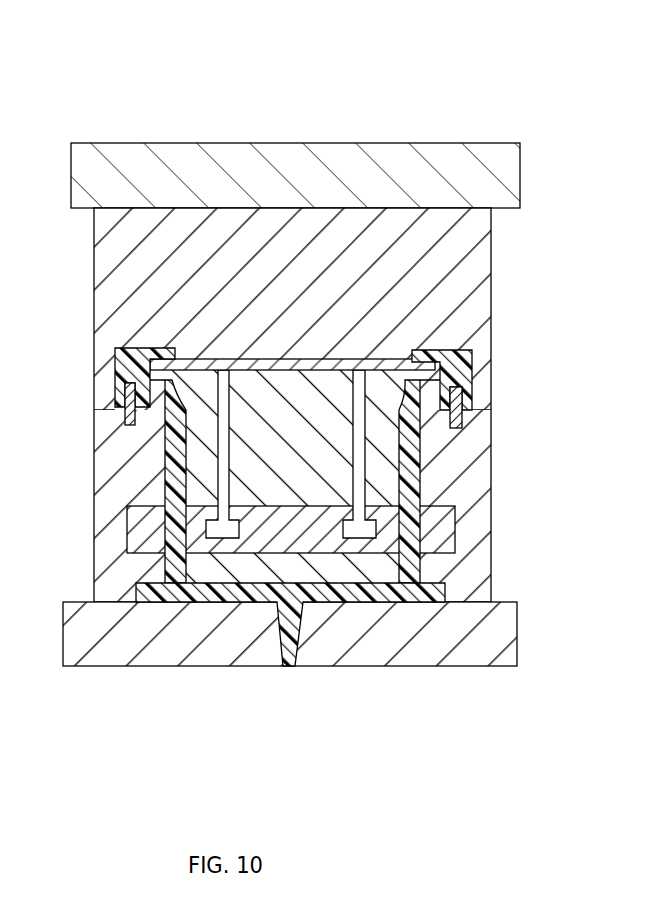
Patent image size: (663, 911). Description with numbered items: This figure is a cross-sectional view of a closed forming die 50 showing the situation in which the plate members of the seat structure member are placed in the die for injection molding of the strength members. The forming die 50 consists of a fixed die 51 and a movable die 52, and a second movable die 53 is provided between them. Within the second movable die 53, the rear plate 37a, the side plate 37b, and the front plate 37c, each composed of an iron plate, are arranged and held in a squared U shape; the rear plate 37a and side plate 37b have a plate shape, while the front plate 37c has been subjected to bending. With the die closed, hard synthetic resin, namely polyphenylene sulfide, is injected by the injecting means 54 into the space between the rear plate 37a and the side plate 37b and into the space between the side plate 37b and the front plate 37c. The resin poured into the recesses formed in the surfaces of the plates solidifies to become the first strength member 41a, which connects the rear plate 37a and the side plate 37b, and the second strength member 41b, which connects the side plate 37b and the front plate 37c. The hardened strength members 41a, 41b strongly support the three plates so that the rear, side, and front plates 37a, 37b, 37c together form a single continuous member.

The forming die 50 is at (305, 342).
The fixed die 51 is at (500, 633).
The movable die 52 is at (483, 262).
The second movable die 53 is at (482, 487).
The means for injecting hard synthetic resin 54 is at (424, 531).
The first strength member 41a is at (117, 375).
The second strength member 41b is at (469, 370).
The rear plate 37a is at (123, 422).
The side plate 37b is at (204, 359).
The front plate 37c is at (464, 414).